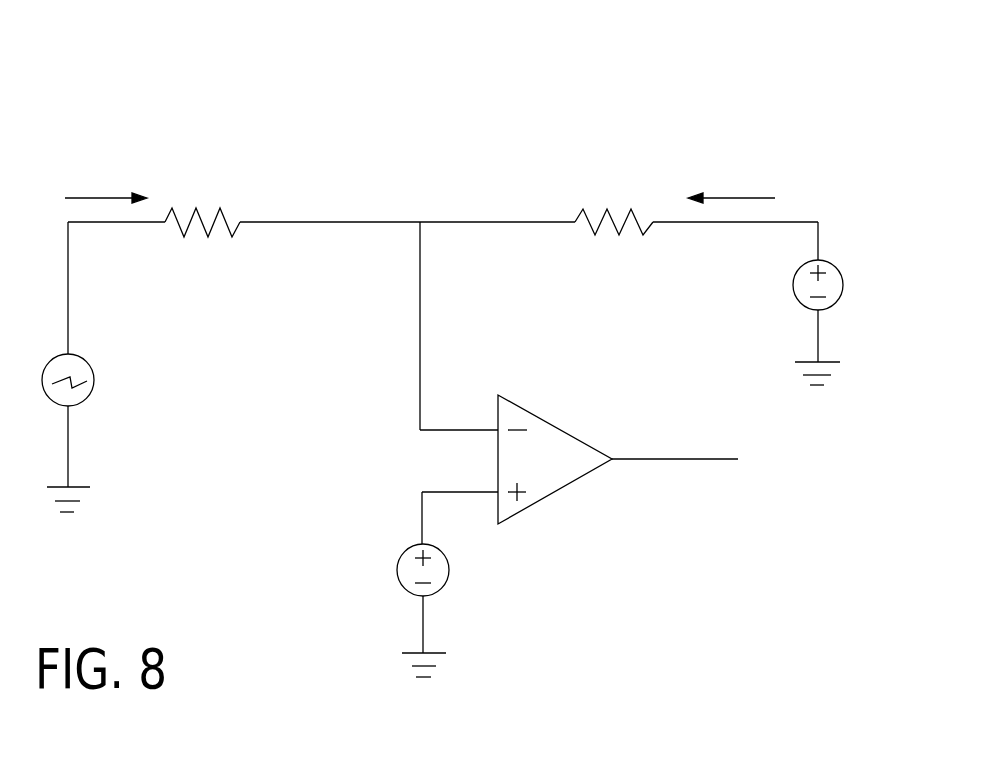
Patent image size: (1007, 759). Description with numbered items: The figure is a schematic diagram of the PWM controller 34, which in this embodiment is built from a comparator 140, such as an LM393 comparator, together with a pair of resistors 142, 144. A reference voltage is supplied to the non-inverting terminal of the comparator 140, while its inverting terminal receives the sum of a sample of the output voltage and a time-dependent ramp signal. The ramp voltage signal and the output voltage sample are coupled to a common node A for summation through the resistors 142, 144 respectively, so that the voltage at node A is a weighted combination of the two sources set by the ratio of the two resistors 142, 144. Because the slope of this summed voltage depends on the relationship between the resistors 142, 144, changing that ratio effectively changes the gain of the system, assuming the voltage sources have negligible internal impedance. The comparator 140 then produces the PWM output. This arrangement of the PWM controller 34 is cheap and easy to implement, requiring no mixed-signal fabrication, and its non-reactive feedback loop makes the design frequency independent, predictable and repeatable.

The PWM controller 34 is at (636, 131).
The comparator 140 is at (547, 498).
The resistor 142 is at (197, 212).
The resistor 144 is at (610, 207).